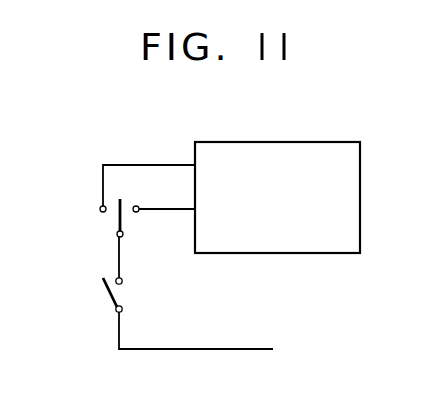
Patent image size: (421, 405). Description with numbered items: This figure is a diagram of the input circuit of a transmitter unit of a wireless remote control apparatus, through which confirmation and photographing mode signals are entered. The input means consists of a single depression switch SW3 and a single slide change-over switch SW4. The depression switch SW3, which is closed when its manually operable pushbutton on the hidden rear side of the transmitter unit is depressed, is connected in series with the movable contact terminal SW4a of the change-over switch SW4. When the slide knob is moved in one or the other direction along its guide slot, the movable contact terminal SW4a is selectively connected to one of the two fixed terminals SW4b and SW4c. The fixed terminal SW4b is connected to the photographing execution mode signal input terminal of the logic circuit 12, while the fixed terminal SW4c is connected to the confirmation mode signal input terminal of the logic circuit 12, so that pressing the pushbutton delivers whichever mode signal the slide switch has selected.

The logic circuit 12 is at (327, 155).
The fixed terminal SW4b is at (101, 206).
The fixed terminal SW4c is at (134, 206).
The slide change-over switch SW4 is at (117, 215).
The movable contact terminal SW4a is at (123, 235).
The depression switch SW3 is at (108, 292).